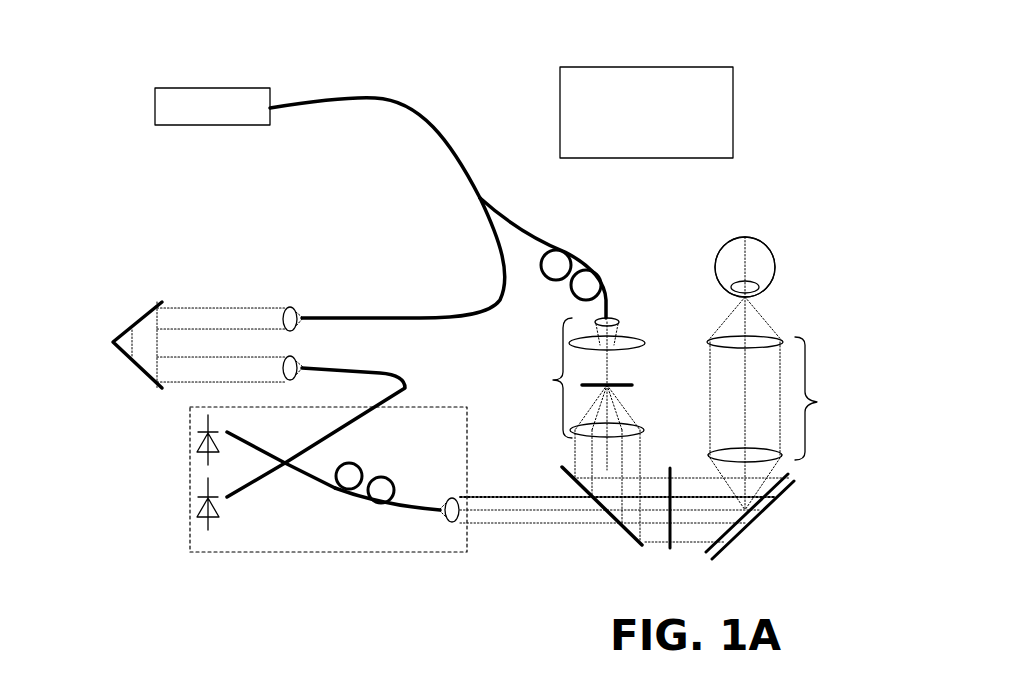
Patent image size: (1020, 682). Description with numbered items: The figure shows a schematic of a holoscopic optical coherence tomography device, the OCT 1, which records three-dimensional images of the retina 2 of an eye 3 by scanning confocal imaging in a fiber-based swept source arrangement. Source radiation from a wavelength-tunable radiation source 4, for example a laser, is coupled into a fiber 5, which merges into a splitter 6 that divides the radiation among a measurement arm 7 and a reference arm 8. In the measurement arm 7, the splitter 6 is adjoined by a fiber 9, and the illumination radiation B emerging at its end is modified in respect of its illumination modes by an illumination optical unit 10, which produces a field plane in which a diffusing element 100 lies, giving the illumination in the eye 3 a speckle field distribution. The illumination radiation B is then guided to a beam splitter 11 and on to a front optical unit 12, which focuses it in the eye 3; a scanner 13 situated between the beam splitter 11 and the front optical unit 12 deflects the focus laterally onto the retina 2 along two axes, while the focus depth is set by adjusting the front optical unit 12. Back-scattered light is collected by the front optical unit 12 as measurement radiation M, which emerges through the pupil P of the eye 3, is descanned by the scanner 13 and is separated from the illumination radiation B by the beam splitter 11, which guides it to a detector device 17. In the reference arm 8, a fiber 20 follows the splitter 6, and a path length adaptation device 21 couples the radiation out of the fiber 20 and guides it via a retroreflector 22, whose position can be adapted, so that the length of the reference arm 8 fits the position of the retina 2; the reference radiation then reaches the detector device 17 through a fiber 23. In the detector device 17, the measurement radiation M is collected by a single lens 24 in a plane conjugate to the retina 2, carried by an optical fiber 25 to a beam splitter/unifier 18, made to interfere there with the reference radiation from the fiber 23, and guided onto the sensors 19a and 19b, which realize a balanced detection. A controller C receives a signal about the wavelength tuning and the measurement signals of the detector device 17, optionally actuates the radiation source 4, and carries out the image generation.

The OCT 1 is at (103, 40).
The retina 2 is at (730, 240).
The eye 3 is at (760, 240).
The radiation source 4 is at (190, 126).
The fiber 5 is at (380, 98).
The splitter 6 is at (478, 198).
The measurement arm 7 is at (670, 262).
The reference arm 8 is at (335, 222).
The fiber 9 is at (520, 230).
The illumination optical unit 10 is at (577, 430).
The beam splitter 11 is at (625, 537).
The front optical unit 12 is at (780, 403).
The scanner 13 is at (760, 512).
The detector device 17 is at (330, 553).
The beam splitter/unifier 18 is at (283, 470).
The sensor 19a is at (195, 443).
The sensor 19b is at (197, 510).
The fiber 20 is at (382, 318).
The path length adaptation device 21 is at (212, 307).
The retroreflector 22 is at (140, 372).
The fiber 23 is at (398, 397).
The lens 24 is at (460, 498).
The optical fiber 25 is at (387, 474).
The diffusing element 100 is at (640, 370).
The illumination radiation B is at (640, 460).
The controller C is at (735, 120).
The measurement radiation M is at (530, 513).
The pupil P is at (770, 290).